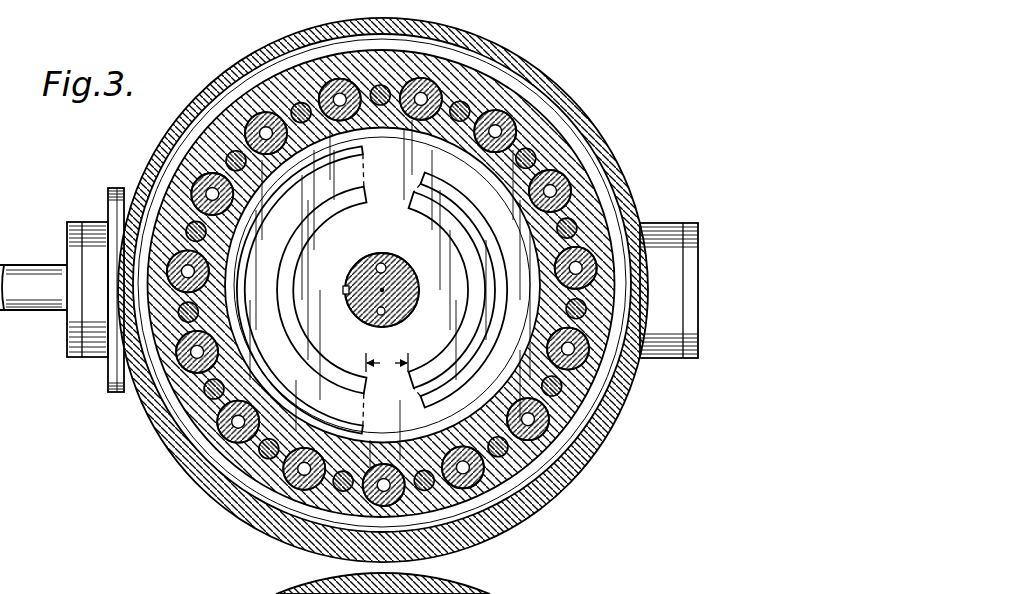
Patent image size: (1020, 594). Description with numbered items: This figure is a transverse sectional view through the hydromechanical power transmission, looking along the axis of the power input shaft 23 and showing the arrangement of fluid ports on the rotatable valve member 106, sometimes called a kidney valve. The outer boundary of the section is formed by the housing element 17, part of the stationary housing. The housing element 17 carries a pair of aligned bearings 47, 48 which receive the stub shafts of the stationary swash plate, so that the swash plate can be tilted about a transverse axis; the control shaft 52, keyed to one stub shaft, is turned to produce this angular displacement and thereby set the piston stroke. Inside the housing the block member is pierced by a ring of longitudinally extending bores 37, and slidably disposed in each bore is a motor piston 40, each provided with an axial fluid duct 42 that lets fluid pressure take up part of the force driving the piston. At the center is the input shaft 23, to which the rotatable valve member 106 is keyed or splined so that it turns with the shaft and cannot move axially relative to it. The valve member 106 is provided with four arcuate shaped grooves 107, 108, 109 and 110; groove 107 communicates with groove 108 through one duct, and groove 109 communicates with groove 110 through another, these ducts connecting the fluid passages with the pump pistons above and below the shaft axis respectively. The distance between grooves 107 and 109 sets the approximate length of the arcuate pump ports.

The housing element 17 is at (620, 418).
The power input shaft 23 is at (401, 269).
The longitudinally extending bore 37 is at (393, 466).
The motor piston 40 is at (544, 172).
The axial fluid duct 42 is at (571, 187).
The bearing 47 is at (90, 220).
The bearing 48 is at (673, 222).
The control shaft 52 is at (20, 270).
The rotatable valve member 106 is at (438, 350).
The arcuate shaped groove 107 is at (333, 212).
The arcuate shaped groove 108 is at (255, 352).
The arcuate shaped groove 109 is at (478, 289).
The arcuate shaped groove 110 is at (495, 233).